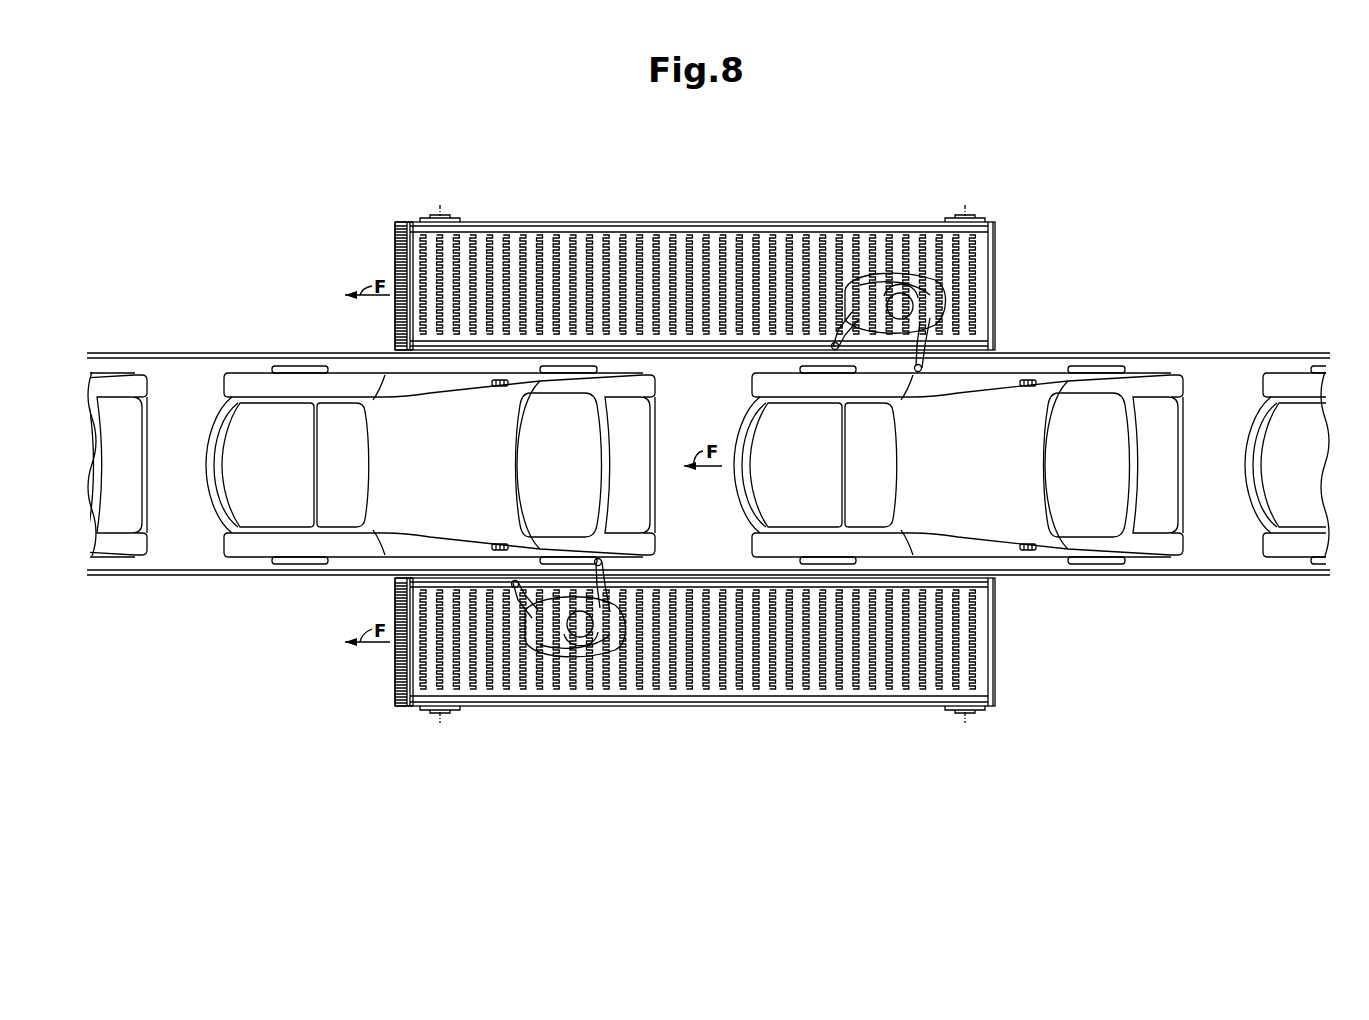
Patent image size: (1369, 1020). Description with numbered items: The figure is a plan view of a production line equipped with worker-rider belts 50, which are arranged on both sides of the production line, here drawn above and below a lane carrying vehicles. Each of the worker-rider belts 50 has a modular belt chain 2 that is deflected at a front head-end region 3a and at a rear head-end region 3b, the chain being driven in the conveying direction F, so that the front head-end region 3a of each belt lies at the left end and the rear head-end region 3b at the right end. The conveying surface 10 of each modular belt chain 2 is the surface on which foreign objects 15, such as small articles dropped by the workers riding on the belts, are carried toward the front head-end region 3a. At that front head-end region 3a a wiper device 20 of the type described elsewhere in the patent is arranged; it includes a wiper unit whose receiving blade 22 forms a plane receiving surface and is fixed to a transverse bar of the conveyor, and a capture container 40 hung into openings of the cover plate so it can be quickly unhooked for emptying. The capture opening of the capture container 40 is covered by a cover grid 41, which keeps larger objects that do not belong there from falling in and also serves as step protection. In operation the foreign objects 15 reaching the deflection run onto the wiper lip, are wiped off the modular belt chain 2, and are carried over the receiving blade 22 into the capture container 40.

The modular belt chain 2 is at (778, 224).
The worker-rider belts 50 is at (858, 221).
The conveying surface 10 is at (688, 240).
The foreign objects 15 is at (494, 322).
The wiper device 20 is at (405, 220).
The receiving blade 22 is at (392, 231).
The front head-end region 3a is at (393, 247).
The capture container 40 is at (393, 264).
The cover grid 41 is at (393, 332).
The rear head-end region 3b is at (997, 289).